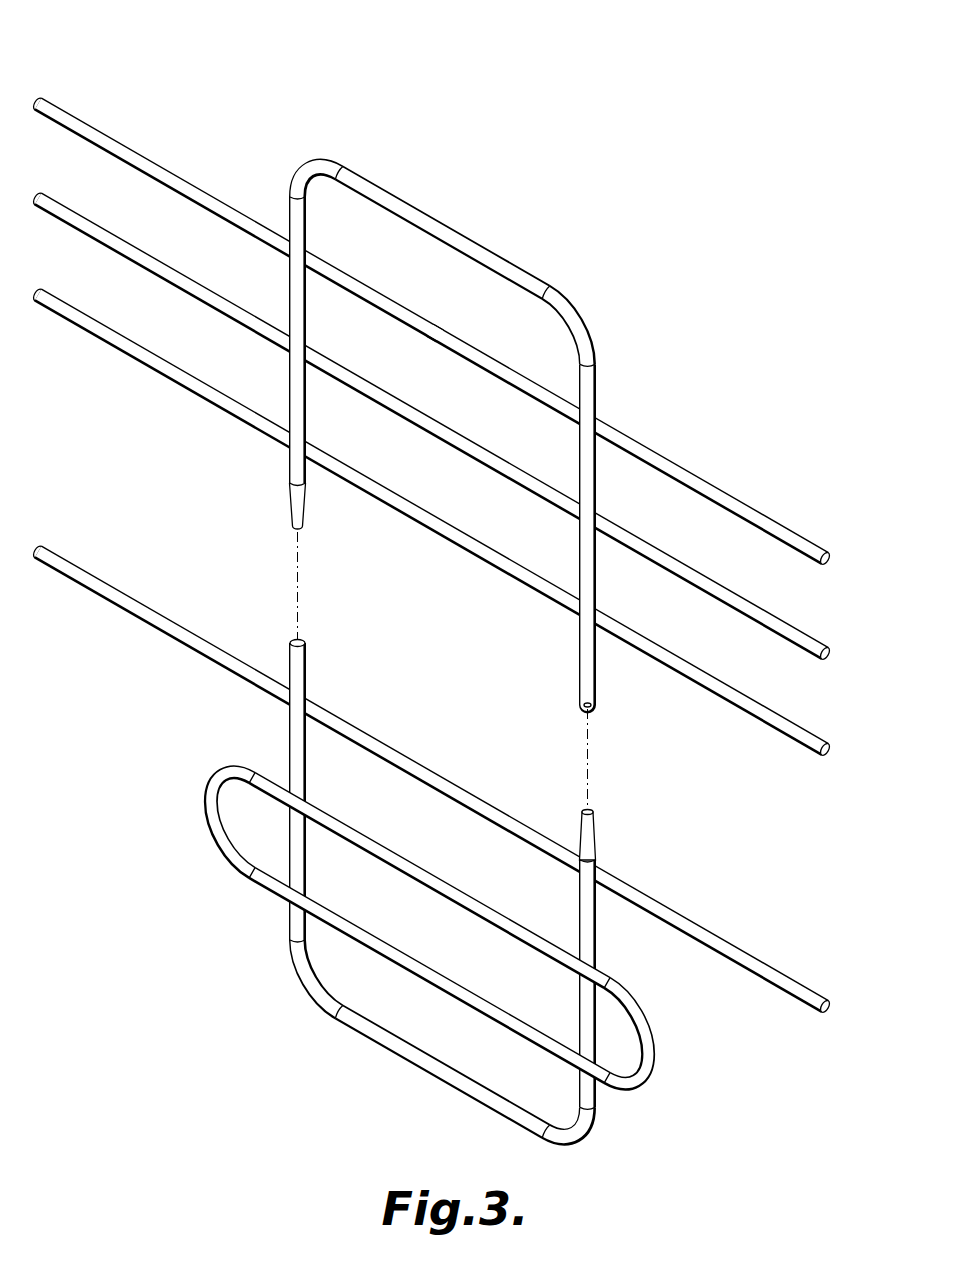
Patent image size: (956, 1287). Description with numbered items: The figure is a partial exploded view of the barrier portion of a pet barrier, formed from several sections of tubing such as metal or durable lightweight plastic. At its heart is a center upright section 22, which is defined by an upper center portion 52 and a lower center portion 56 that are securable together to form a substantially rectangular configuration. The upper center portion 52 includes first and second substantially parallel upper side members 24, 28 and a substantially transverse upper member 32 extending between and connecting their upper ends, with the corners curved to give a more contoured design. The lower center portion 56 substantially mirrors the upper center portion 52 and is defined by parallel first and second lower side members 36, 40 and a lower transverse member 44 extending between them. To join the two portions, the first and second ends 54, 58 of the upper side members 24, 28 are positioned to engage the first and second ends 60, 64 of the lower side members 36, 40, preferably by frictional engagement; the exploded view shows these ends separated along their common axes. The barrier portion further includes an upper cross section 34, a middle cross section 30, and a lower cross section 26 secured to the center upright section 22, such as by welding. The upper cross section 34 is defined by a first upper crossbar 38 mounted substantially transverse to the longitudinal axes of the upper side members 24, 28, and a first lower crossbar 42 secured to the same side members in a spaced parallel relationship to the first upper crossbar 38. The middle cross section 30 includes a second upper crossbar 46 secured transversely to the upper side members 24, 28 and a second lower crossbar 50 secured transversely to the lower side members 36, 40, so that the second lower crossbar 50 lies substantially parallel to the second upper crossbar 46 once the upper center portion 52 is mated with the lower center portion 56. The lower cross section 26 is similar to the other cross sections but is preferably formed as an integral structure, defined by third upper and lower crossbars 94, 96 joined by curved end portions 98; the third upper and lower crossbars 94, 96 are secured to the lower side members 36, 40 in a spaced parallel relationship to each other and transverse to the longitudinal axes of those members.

The center upright section 22 is at (465, 581).
The first upper side member 24 is at (296, 212).
The lower cross section 26 is at (411, 898).
The second upper side member 28 is at (589, 378).
The middle cross section 30 is at (432, 651).
The upper transverse member 32 is at (444, 228).
The upper cross section 34 is at (432, 309).
The first lower side member 36 is at (293, 729).
The first upper crossbar 38 is at (707, 487).
The second lower side member 40 is at (593, 927).
The first lower crossbar 42 is at (703, 581).
The lower transverse member 44 is at (432, 1068).
The second upper crossbar 46 is at (691, 673).
The second lower crossbar 50 is at (681, 916).
The upper center portion 52 is at (605, 338).
The first end 54 is at (293, 494).
The lower center portion 56 is at (608, 1100).
The second end 58 is at (592, 668).
The first end 60 is at (306, 668).
The second end 64 is at (597, 826).
The third upper crossbar 94 is at (378, 850).
The third lower crossbar 96 is at (502, 1006).
The curved end portions 98 is at (216, 783).